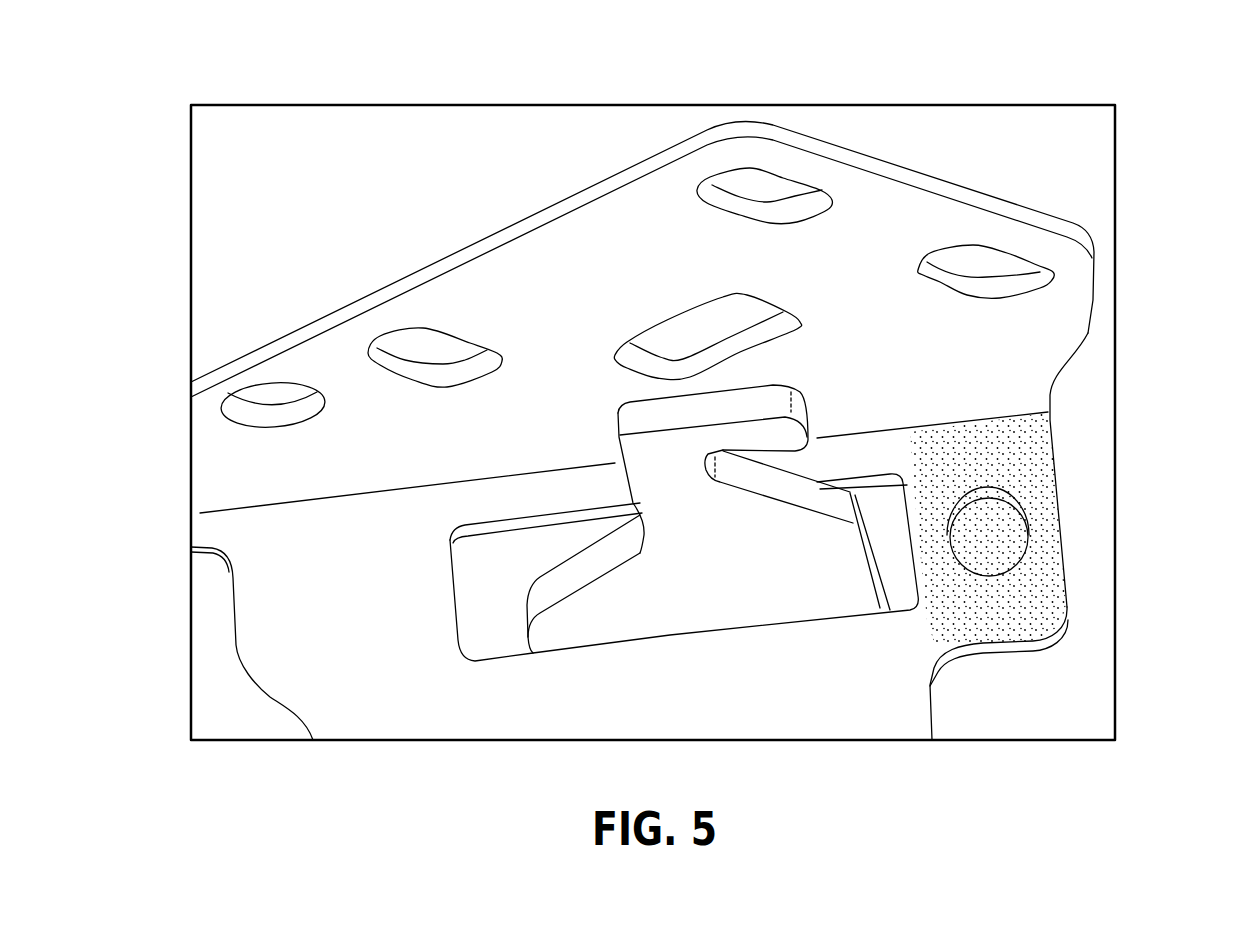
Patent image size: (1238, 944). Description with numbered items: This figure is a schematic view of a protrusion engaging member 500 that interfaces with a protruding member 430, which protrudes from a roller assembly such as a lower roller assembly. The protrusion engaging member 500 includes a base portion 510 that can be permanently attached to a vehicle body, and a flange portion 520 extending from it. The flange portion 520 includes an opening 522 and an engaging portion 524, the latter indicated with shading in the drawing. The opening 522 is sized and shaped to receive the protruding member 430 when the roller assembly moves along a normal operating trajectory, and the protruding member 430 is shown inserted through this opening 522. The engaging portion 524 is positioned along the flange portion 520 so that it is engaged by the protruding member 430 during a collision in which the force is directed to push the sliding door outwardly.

The protrusion engaging member 500 is at (918, 150).
The base portion 510 is at (1037, 342).
The flange portion 520 is at (270, 593).
The opening 522 is at (503, 657).
The engaging portion 524 is at (1025, 615).
The protruding member 430 is at (752, 583).